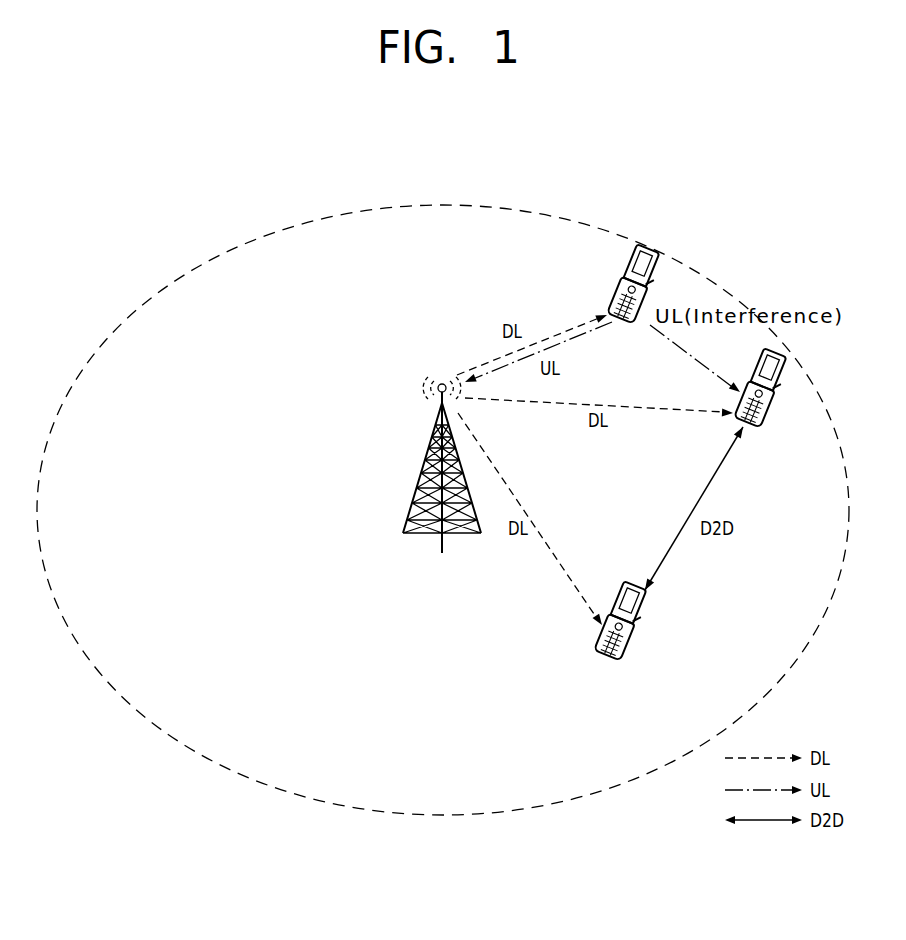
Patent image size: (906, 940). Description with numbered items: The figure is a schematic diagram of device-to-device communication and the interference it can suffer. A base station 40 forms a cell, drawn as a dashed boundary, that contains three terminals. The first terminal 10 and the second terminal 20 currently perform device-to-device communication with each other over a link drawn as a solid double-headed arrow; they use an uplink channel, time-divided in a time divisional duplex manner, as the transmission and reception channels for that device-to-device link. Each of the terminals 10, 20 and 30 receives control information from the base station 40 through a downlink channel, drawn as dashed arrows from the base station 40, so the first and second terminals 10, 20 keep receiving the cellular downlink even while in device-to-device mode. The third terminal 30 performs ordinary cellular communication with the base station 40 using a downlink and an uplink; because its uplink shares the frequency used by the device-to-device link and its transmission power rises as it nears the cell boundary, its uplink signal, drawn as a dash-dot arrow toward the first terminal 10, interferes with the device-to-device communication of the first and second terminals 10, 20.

The first terminal 10 is at (776, 408).
The second terminal 20 is at (642, 630).
The third terminal 30 is at (655, 253).
The base station 40 is at (427, 474).